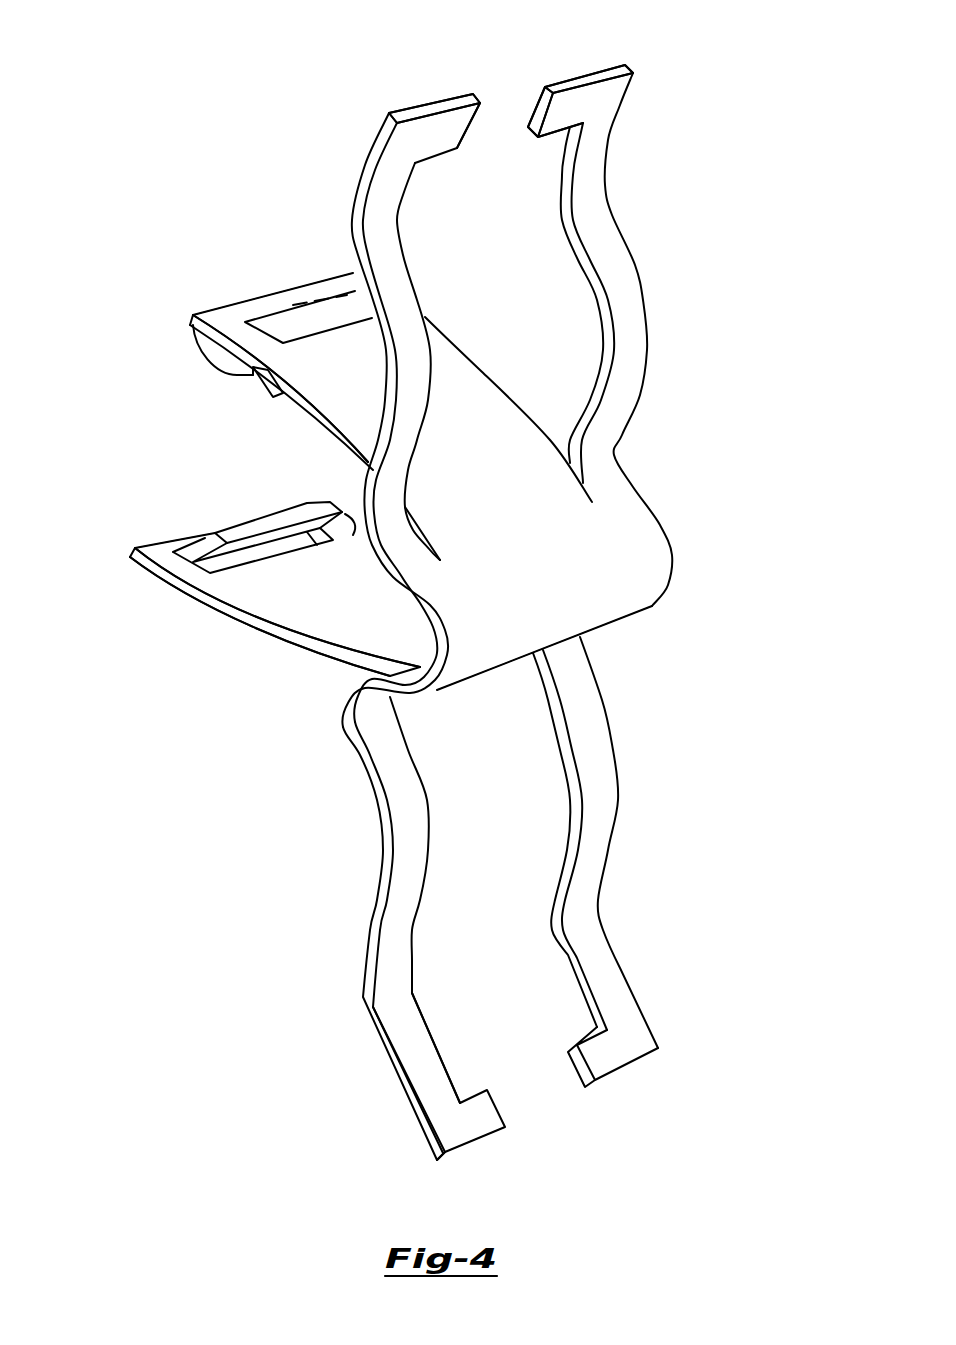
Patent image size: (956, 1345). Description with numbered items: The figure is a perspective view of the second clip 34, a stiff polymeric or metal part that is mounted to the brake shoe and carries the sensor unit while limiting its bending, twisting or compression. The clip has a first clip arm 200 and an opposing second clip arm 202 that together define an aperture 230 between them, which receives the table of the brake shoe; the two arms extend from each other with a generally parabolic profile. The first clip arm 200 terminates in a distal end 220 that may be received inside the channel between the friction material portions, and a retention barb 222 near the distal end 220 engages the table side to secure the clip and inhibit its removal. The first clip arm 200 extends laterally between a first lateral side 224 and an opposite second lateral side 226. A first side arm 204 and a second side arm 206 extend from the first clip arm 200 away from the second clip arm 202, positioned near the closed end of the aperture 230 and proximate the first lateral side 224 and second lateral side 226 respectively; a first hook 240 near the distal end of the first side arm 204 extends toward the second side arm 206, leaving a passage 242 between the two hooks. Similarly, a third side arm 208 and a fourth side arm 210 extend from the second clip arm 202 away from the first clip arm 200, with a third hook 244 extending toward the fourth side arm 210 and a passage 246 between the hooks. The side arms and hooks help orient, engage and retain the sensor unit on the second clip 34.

The first clip arm 200 is at (437, 434).
The second clip arm 202 is at (258, 633).
The first side arm 204 is at (398, 205).
The second side arm 206 is at (608, 140).
The third side arm 208 is at (373, 918).
The fourth side arm 210 is at (603, 833).
The distal end 220 is at (288, 292).
The retention barb 222 is at (197, 325).
The first lateral side 224 is at (320, 427).
The second lateral side 226 is at (480, 362).
The aperture 230 is at (175, 413).
The second clip 34 is at (676, 562).
The first hook 240 is at (453, 100).
The passage 242 is at (503, 117).
The third hook 244 is at (492, 1135).
The passage 246 is at (543, 1093).